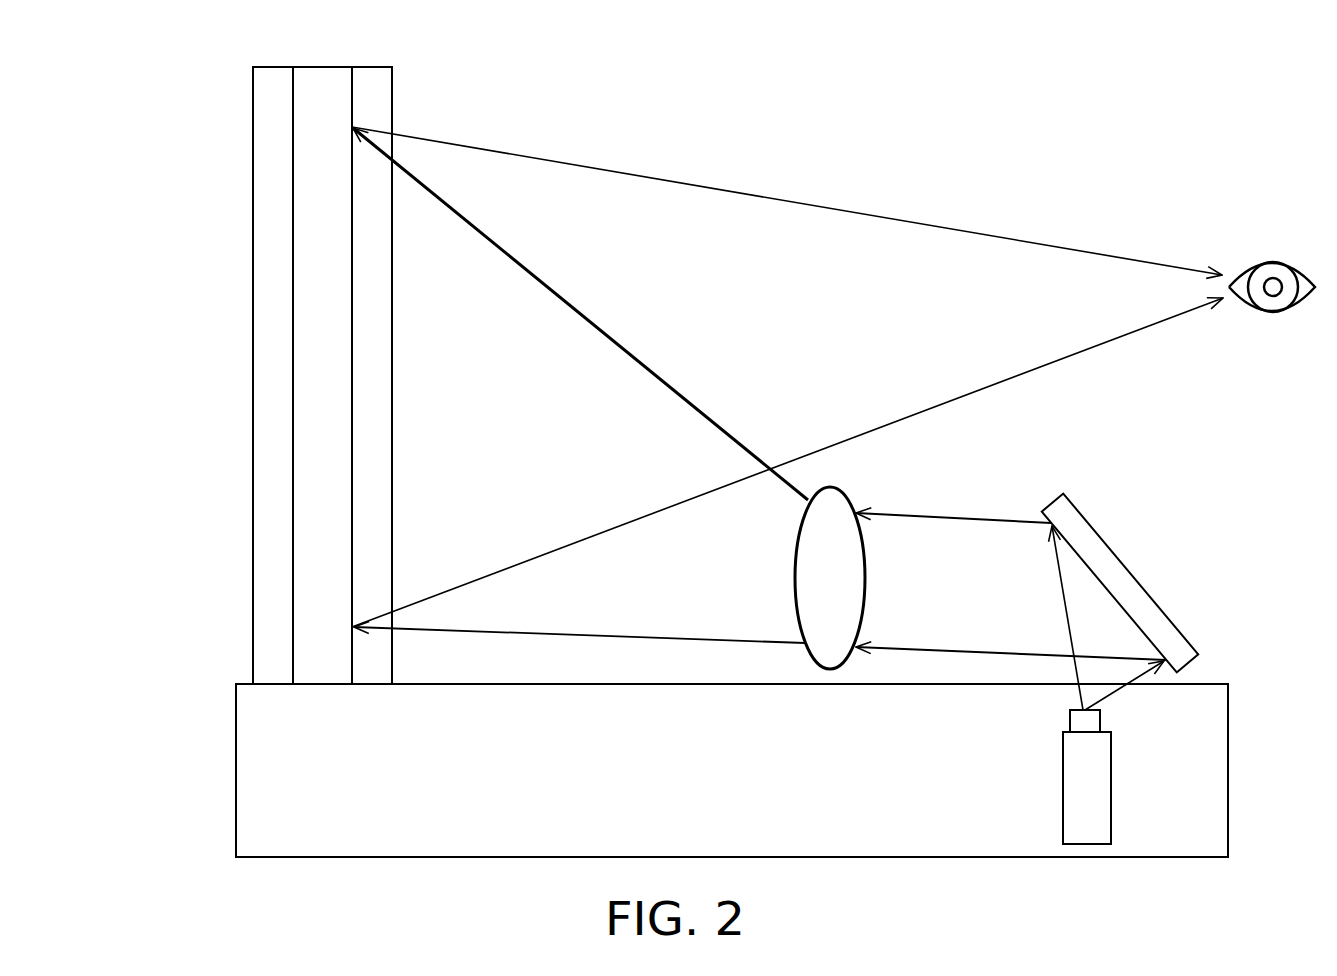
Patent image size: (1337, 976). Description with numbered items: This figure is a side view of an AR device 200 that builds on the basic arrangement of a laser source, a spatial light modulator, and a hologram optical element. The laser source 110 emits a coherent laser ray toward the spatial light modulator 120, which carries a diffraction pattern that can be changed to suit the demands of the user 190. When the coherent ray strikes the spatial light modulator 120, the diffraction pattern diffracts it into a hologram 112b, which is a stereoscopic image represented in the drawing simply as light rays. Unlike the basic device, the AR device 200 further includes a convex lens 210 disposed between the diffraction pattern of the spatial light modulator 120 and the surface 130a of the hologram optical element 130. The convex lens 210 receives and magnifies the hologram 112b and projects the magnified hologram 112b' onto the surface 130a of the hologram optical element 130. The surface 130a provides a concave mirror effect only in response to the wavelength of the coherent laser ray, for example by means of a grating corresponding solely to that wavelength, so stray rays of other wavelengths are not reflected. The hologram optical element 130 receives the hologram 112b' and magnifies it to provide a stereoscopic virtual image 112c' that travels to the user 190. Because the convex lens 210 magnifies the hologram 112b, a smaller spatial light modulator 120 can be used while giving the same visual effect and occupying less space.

The AR device 200 is at (113, 883).
The laser source 110 is at (1111, 812).
The spatial light modulator 120 is at (1127, 568).
The hologram optical element 130 is at (323, 66).
The surface 130a is at (353, 234).
The user 190 is at (1268, 262).
The convex lens 210 is at (845, 495).
The hologram 112b is at (1011, 598).
The magnified hologram 112b' is at (580, 385).
The stereoscopic virtual image 112c' is at (787, 377).